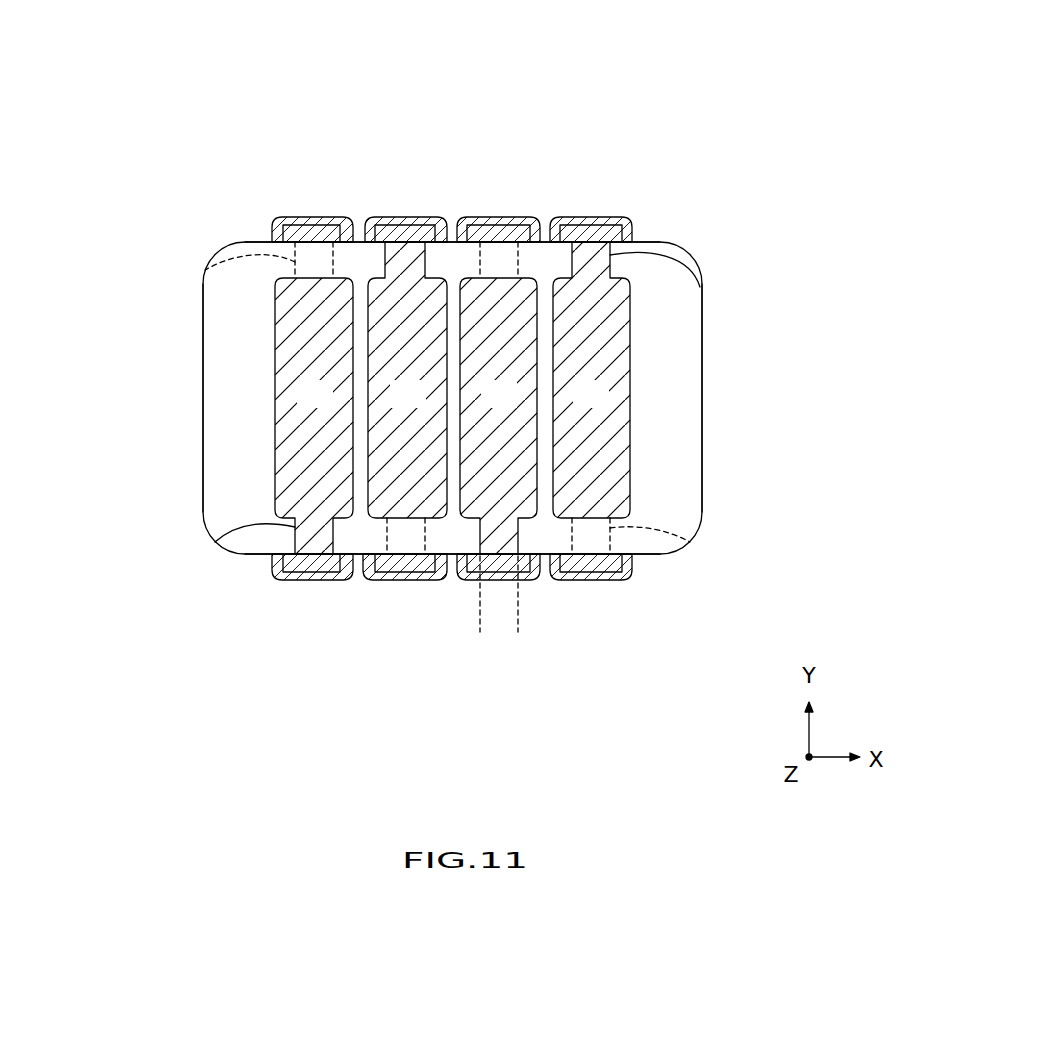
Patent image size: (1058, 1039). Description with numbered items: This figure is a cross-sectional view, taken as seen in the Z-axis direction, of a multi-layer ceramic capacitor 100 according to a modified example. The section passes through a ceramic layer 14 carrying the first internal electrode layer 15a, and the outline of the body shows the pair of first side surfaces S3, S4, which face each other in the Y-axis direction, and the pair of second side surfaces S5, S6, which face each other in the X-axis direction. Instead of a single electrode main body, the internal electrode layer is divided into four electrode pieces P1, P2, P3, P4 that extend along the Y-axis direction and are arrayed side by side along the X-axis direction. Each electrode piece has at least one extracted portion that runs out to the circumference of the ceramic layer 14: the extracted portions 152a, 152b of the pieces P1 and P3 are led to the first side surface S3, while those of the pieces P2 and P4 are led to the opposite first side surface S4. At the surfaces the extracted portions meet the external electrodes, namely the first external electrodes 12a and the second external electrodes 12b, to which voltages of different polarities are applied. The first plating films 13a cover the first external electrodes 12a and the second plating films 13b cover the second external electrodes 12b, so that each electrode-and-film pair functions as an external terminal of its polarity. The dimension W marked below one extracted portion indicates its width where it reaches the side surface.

The multi-layer ceramic capacitor 100 is at (742, 76).
The ceramic layer 14 is at (690, 447).
The first internal electrode layer 15a is at (693, 398).
The extracted portion 152a is at (698, 273).
The extracted portion 152b is at (209, 272).
The first external electrode 12a is at (563, 632).
The second external electrode 12b is at (653, 605).
The first plating film 13a is at (323, 677).
The second plating film 13b is at (613, 690).
The first side surface S3 is at (245, 556).
The first side surface S4 is at (662, 240).
The second side surface S5 is at (203, 366).
The second side surface S6 is at (703, 477).
The width of connection portion W is at (550, 617).
The electrode piece P1 is at (294, 405).
The electrode piece P2 is at (388, 405).
The electrode piece P3 is at (479, 405).
The electrode piece P4 is at (571, 405).